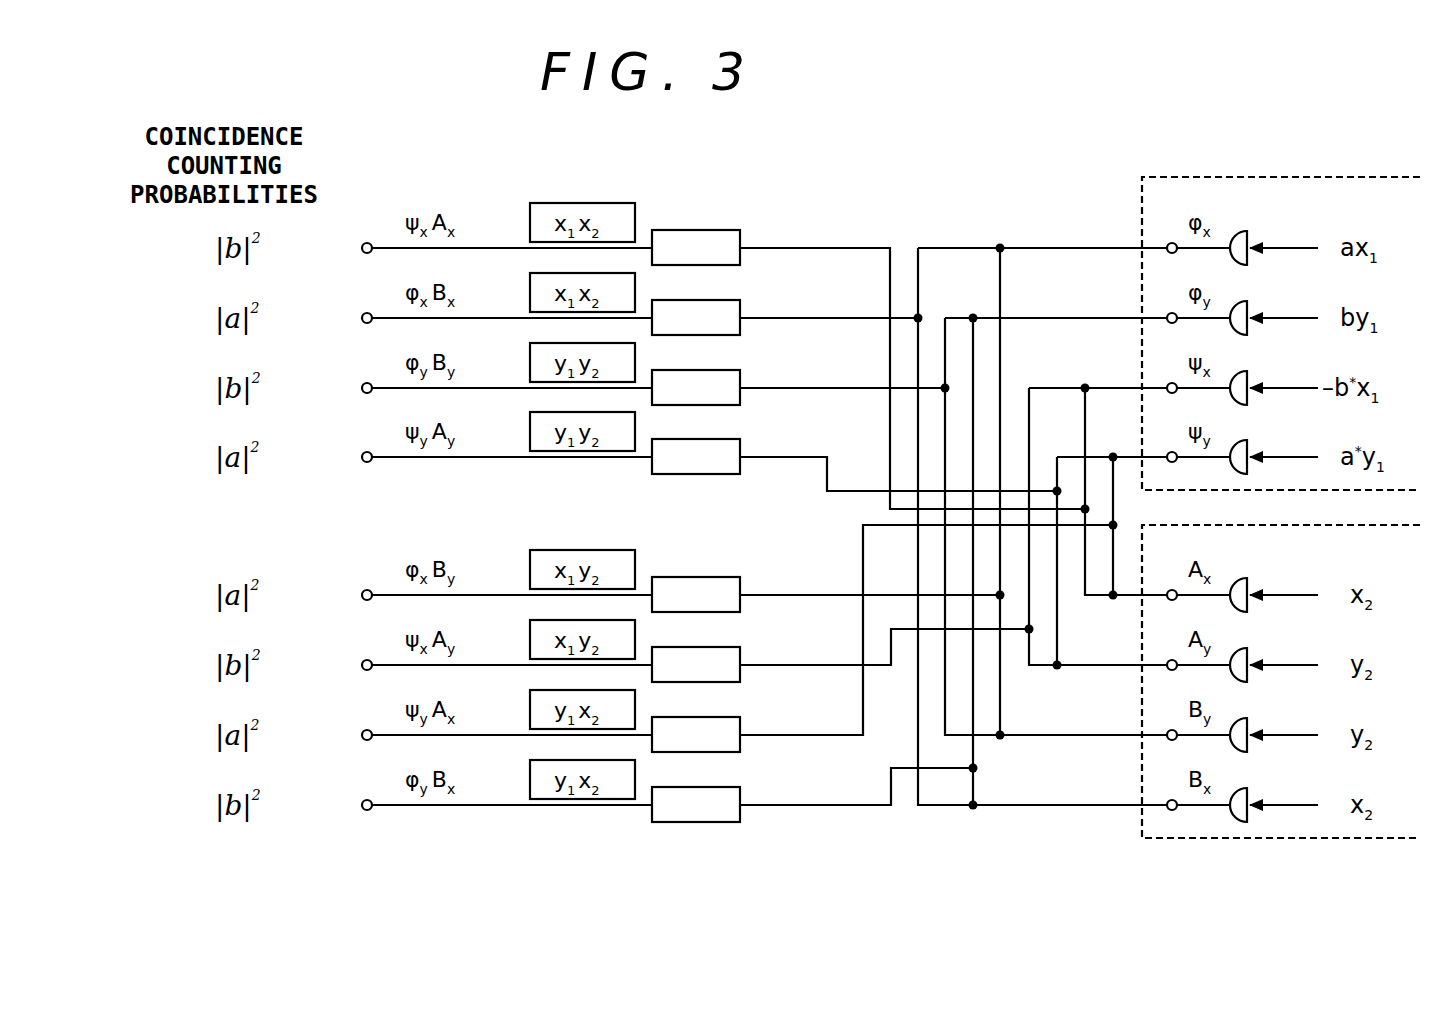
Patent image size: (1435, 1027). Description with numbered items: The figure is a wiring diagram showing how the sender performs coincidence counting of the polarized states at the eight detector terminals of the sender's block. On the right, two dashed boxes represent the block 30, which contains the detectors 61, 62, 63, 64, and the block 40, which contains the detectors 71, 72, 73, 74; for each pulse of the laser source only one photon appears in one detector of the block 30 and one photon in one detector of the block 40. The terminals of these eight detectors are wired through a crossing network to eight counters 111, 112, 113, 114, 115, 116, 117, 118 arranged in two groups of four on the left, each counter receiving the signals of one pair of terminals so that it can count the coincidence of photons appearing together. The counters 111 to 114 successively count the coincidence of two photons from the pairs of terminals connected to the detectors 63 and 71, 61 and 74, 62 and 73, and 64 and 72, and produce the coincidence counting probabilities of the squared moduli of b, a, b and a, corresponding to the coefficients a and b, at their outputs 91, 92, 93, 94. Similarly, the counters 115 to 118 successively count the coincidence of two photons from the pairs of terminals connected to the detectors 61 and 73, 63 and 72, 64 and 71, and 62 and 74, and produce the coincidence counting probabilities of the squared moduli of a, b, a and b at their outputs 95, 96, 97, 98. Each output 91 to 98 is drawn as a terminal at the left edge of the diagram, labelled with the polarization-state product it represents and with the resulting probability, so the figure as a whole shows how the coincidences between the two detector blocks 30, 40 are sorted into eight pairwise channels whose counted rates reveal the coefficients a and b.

The block 30 is at (1228, 177).
The block 40 is at (1210, 838).
The detector 61 is at (1245, 229).
The detector 62 is at (1245, 299).
The detector 63 is at (1245, 369).
The detector 64 is at (1245, 438).
The detector 71 is at (1245, 576).
The detector 72 is at (1245, 646).
The detector 73 is at (1245, 716).
The detector 74 is at (1245, 786).
The output 91 is at (469, 231).
The output 92 is at (469, 301).
The output 93 is at (469, 371).
The output 94 is at (469, 440).
The output 95 is at (469, 578).
The output 96 is at (469, 648).
The output 97 is at (469, 718).
The output 98 is at (469, 788).
The counter 111 is at (748, 229).
The counter 112 is at (748, 299).
The counter 113 is at (748, 369).
The counter 114 is at (748, 438).
The counter 115 is at (748, 576).
The counter 116 is at (748, 646).
The counter 117 is at (748, 716).
The counter 118 is at (748, 786).